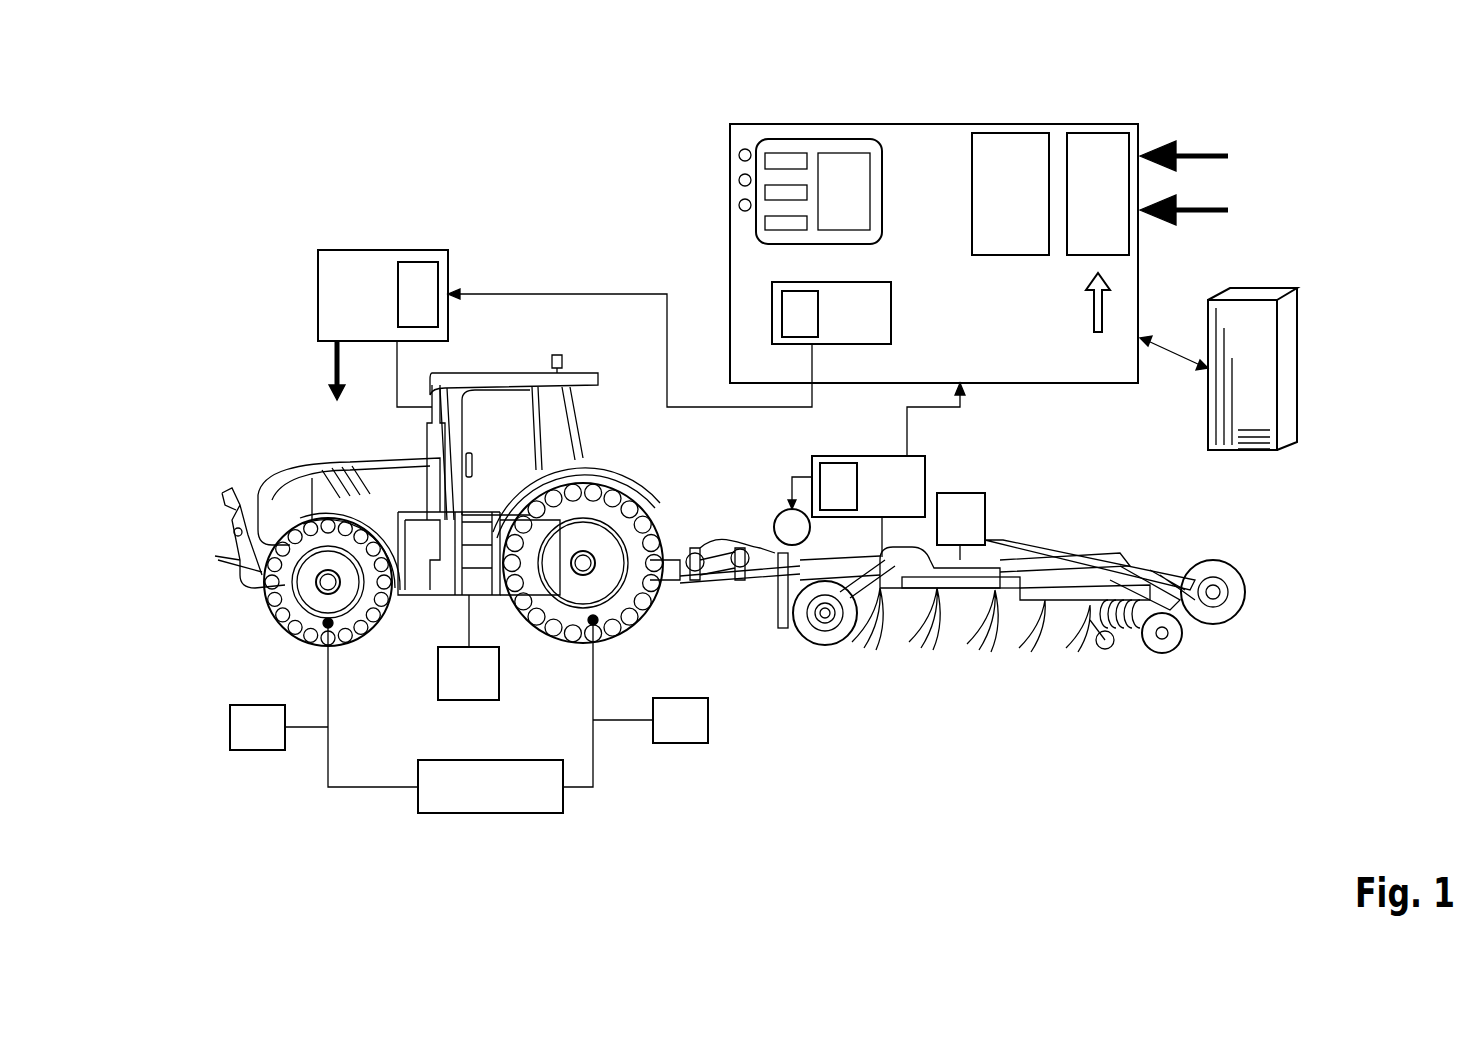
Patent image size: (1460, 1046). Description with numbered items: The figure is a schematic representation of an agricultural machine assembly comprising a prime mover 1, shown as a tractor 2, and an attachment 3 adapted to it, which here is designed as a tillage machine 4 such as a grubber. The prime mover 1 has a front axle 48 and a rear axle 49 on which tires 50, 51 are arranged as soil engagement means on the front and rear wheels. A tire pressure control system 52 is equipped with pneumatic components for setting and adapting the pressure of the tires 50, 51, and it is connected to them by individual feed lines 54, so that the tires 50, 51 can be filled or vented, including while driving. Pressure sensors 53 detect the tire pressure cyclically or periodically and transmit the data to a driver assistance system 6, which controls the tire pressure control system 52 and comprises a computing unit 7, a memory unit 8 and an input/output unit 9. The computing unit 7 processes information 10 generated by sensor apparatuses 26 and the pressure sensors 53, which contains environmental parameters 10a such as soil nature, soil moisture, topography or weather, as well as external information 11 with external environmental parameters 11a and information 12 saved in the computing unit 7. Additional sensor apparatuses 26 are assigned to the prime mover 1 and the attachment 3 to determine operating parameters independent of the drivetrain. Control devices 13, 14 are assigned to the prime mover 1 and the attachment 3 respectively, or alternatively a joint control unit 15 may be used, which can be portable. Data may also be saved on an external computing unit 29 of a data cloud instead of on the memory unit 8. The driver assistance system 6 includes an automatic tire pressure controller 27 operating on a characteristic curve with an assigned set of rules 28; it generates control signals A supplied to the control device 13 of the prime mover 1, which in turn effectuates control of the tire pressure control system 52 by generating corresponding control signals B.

The prime mover 1 is at (381, 528).
The tractor 2 is at (220, 638).
The attachment 3 is at (1021, 583).
The tillage machine 4 is at (1258, 555).
The driver assistance system 6 is at (1100, 392).
The computing unit 7 is at (1107, 210).
The memory unit 8 is at (1019, 210).
The input/output unit 9 is at (768, 147).
The information 10 is at (1236, 126).
The environmental parameters 10a is at (1207, 150).
The external information 11 is at (1242, 188).
The external environmental parameters 11a is at (1222, 206).
The information savable in the computing unit 12 is at (1108, 310).
The control device 13 is at (297, 325).
The control device 14 is at (940, 468).
The joint control unit 15 is at (306, 316).
The additional sensor apparatus 26 is at (486, 685).
The automatic tire pressure controller 27 is at (872, 316).
The set of rules 28 is at (795, 300).
The external computing unit 29 is at (1290, 332).
The front axle 48 is at (332, 590).
The rear axle 49 is at (590, 560).
The tire 50 is at (265, 575).
The tire 51 is at (650, 595).
The tire pressure control system 52 is at (508, 801).
The pressure sensor 53 is at (275, 742).
The feed line 54 is at (326, 782).
The control signals A is at (597, 294).
The control signals B is at (333, 375).